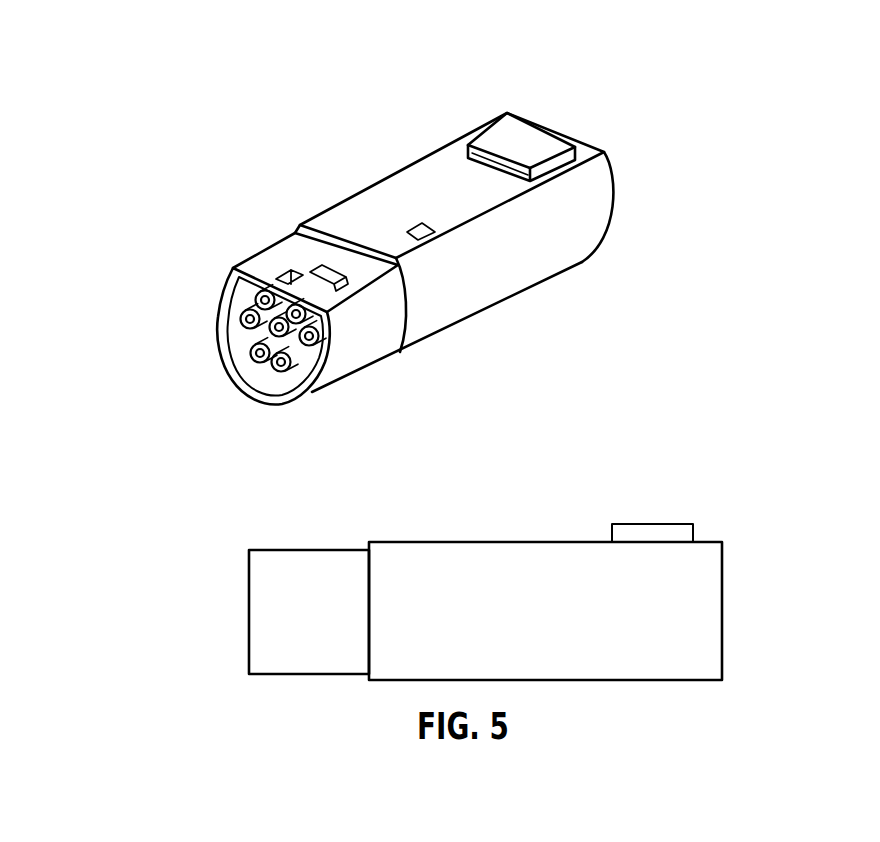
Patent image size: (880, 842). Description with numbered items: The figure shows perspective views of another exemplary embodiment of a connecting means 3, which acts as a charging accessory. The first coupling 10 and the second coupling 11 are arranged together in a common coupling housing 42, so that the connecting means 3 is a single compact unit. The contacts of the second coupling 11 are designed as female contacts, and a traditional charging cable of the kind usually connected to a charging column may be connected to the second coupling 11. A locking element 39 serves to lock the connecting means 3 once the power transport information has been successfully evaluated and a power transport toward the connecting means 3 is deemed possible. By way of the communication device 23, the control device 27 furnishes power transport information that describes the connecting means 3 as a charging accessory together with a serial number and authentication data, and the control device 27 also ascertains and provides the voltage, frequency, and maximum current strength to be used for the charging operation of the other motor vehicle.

The connecting means 3 is at (188, 98).
The second coupling 11 is at (615, 122).
The first coupling 10 is at (236, 348).
The coupling housing 42 is at (363, 188).
The control device 27 is at (434, 233).
The locking element 39 is at (277, 273).
The communication device 23 is at (340, 287).